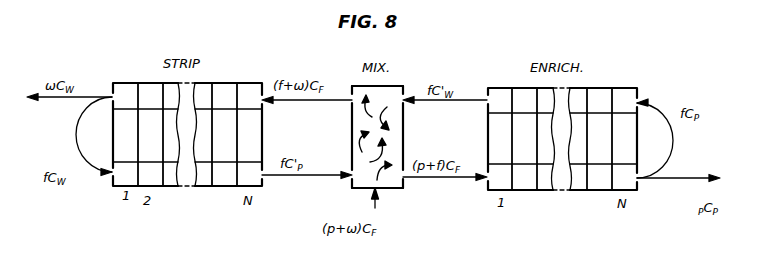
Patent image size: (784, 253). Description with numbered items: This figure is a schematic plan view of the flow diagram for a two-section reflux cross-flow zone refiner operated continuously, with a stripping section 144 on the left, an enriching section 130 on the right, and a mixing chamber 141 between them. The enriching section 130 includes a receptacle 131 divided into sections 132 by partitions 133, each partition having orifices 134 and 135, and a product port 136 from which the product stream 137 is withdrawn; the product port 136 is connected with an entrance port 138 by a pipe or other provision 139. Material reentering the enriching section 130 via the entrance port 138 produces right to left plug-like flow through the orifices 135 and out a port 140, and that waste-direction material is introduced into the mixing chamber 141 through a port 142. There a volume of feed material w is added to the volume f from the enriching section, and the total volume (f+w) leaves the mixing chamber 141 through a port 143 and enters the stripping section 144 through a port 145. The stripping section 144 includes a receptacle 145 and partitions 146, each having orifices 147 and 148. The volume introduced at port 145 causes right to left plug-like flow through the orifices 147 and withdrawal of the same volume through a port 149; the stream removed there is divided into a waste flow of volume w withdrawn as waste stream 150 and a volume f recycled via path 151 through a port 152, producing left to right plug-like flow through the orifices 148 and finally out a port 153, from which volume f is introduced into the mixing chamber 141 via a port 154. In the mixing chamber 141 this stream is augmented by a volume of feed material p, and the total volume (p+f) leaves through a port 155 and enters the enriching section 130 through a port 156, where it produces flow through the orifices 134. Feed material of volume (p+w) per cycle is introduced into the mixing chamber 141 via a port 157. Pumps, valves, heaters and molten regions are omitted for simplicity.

The enriching section 130 is at (547, 87).
The receptacle 131 is at (543, 190).
The sections 132 is at (523, 173).
The partitions 133 is at (512, 129).
The orifices 134 is at (590, 188).
The orifices 135 is at (613, 97).
The product port 136 is at (639, 184).
The product stream 137 is at (685, 177).
The entrance port 138 is at (643, 100).
The pipe 139 is at (677, 138).
The port 140 is at (486, 90).
The mixing chamber 141 is at (400, 85).
The port 142 is at (407, 98).
The port 143 is at (346, 90).
The stripping section 144 is at (229, 83).
The port 145 is at (172, 187).
The partitions 146 is at (163, 135).
The orifices 147 is at (138, 117).
The orifices 148 is at (163, 171).
The port 149 is at (112, 96).
The waste stream 150 is at (50, 98).
The path 151 is at (75, 137).
The port 152 is at (106, 176).
The port 153 is at (264, 180).
The port 154 is at (348, 178).
The port 155 is at (404, 181).
The port 156 is at (485, 182).
The port 157 is at (378, 189).